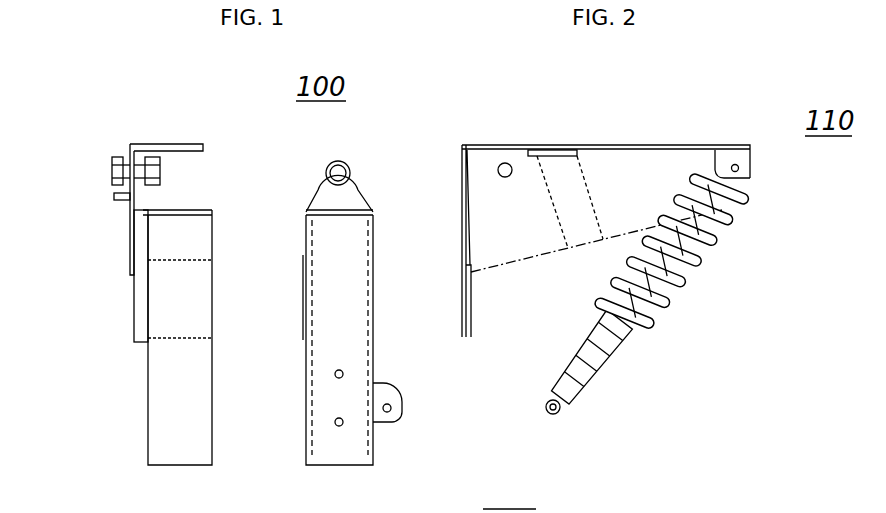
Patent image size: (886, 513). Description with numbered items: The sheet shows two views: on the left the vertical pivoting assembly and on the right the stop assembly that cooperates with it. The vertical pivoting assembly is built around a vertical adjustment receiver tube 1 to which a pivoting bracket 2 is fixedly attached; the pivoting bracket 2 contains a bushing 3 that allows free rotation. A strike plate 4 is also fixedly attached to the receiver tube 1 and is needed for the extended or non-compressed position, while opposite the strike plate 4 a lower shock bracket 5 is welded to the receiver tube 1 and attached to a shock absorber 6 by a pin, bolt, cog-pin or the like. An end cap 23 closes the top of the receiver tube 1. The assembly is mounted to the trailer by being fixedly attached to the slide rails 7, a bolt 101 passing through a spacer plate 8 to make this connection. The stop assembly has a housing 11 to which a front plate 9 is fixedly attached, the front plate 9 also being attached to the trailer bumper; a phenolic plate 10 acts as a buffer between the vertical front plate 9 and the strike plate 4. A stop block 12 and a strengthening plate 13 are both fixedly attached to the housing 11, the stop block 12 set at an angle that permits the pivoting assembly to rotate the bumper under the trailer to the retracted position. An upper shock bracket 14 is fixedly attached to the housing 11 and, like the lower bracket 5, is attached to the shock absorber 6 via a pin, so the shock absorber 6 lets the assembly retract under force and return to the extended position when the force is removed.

In FIG. 1, the vertical adjustment receiver tube 1 is at (147, 406).
In FIG. 1, the pivoting bracket 2 is at (135, 312).
In FIG. 1, the bushing 3 is at (326, 179).
In FIG. 1, the strike plate 4 is at (303, 306).
In FIG. 1, the lower shock bracket 5 is at (392, 424).
In FIG. 2, the shock absorber 6 is at (668, 302).
In FIG. 1, the slide rails 7 is at (138, 141).
In FIG. 1, the spacer plate 8 is at (118, 153).
In FIG. 2, the front plate 9 is at (462, 218).
In FIG. 2, the phenolic plate 10 is at (473, 299).
In FIG. 1, the housing 11 is at (130, 228).
In FIG. 2, the housing 11 is at (738, 143).
In FIG. 2, the stop block 12 is at (588, 186).
In FIG. 2, the strengthening plate 13 is at (548, 146).
In FIG. 2, the upper shock bracket 14 is at (750, 181).
In FIG. 1, the end cap 23 is at (194, 208).
In FIG. 1, the bolt 101 is at (113, 176).